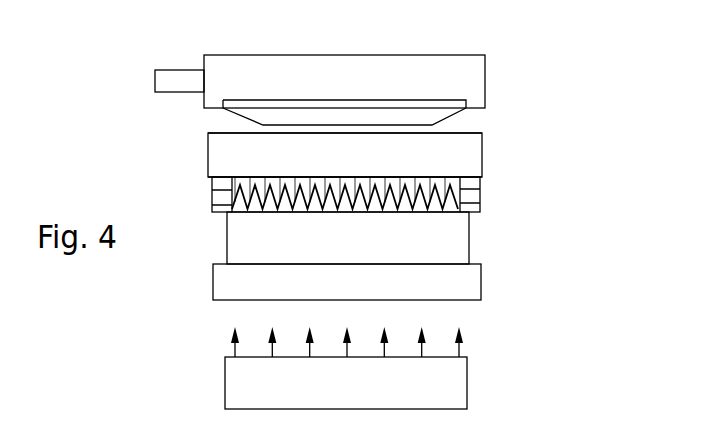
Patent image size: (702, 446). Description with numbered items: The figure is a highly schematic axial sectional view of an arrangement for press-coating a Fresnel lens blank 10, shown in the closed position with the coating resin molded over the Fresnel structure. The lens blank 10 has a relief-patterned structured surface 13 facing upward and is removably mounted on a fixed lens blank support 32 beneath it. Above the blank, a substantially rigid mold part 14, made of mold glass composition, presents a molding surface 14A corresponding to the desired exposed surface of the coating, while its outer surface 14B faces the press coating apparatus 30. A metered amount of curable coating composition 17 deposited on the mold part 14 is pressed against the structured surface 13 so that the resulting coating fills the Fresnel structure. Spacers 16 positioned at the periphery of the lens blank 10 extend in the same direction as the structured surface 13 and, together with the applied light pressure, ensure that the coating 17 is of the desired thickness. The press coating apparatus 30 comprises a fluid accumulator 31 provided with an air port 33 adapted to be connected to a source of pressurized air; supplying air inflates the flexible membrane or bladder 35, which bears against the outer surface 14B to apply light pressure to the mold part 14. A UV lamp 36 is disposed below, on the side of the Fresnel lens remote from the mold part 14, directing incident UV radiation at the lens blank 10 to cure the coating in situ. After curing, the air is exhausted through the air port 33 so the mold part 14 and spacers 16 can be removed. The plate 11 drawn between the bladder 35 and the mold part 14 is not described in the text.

The Fresnel lens blank 10 is at (227, 243).
The optical plate 11 is at (250, 115).
The structured surface 13 is at (438, 203).
The mold part 14 is at (482, 158).
The molding surface 14A is at (250, 176).
The outer surface 14B is at (480, 133).
The spacers 16 is at (482, 201).
The curable coating composition 17 is at (240, 191).
The press coating apparatus 30 is at (109, 103).
The fluid accumulator 31 is at (205, 55).
The lens blank support 32 is at (480, 284).
The air port 33 is at (158, 79).
The flexible membrane or bladder 35 is at (460, 99).
The UV lamp 36 is at (225, 383).